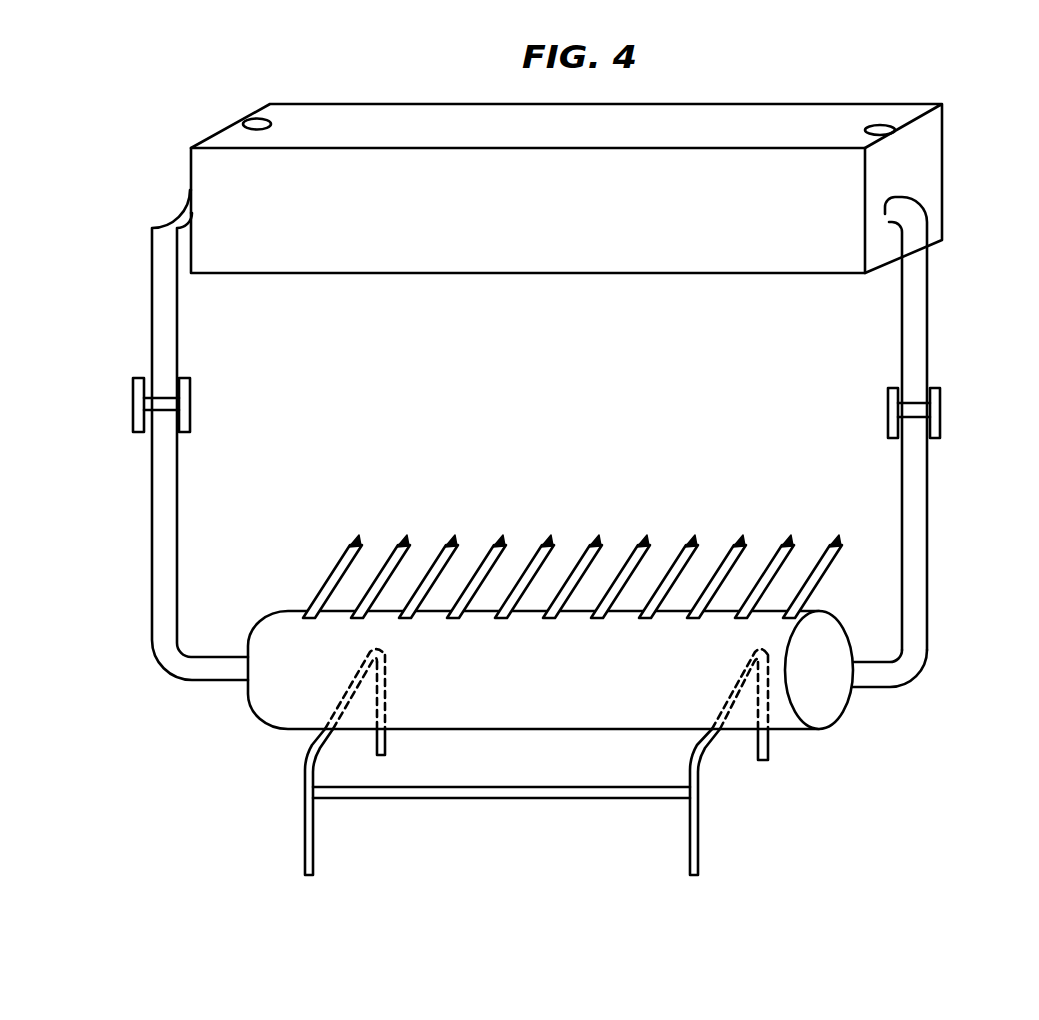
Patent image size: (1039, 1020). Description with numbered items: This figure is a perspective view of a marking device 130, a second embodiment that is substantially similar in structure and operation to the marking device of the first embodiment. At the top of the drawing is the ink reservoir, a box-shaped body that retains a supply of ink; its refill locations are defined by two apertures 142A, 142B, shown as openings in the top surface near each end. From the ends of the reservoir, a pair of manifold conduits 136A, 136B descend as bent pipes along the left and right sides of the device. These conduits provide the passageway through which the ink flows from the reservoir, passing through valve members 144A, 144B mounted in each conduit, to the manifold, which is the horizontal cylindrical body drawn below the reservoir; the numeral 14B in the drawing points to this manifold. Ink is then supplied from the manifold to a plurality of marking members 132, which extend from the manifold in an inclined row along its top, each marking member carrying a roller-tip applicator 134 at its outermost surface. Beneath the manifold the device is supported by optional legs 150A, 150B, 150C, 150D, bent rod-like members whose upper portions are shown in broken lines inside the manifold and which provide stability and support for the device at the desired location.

The marking device 130 is at (88, 236).
The aperture 142A is at (246, 124).
The aperture 142B is at (884, 126).
The manifold conduit 136A is at (152, 500).
The manifold conduit 136B is at (927, 500).
The valve member 144A is at (133, 408).
The valve member 144B is at (942, 418).
The finned tube 14B is at (852, 712).
The marking member 132 is at (498, 556).
The roller-tip applicator 134 is at (450, 548).
The leg 150A is at (386, 745).
The leg 150B is at (313, 826).
The leg 150C is at (698, 836).
The leg 150D is at (769, 752).